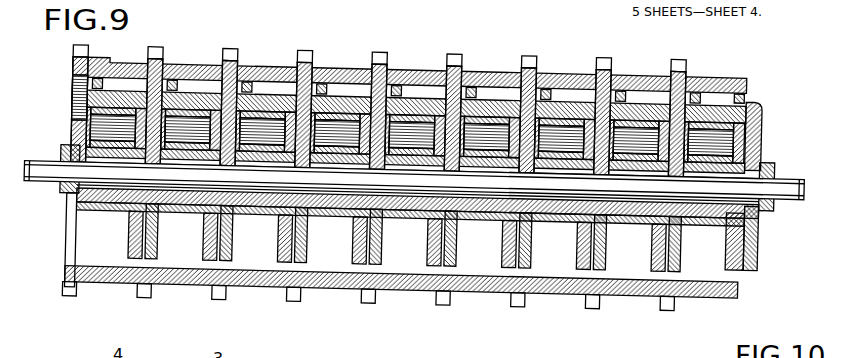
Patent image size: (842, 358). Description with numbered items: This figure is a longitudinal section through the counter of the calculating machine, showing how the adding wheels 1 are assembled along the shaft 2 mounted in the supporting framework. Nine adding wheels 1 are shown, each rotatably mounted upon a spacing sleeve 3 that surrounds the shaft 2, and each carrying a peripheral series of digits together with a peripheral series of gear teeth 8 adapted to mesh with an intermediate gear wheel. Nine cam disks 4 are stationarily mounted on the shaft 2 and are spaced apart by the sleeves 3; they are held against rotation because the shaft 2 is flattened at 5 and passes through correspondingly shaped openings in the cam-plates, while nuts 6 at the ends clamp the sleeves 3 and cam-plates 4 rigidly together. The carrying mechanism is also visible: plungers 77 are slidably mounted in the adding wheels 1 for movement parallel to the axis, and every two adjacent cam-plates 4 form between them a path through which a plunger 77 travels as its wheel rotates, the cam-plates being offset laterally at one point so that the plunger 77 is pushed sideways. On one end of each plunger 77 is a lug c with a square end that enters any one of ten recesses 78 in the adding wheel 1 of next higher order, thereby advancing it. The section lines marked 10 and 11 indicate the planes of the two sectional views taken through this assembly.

The adding wheels 1 is at (128, 64).
The shaft 2 is at (42, 167).
The spacing sleeve 3 is at (102, 203).
The cam disks 4 is at (158, 242).
The flattened portion of shaft 5 is at (348, 168).
The nuts 6 is at (63, 148).
The gear teeth 8 is at (229, 46).
The shaft 10 is at (297, 52).
The master gear wheel 11 is at (400, 54).
The plungers 77 is at (500, 103).
The recesses 78 is at (138, 76).
The lug c is at (441, 92).